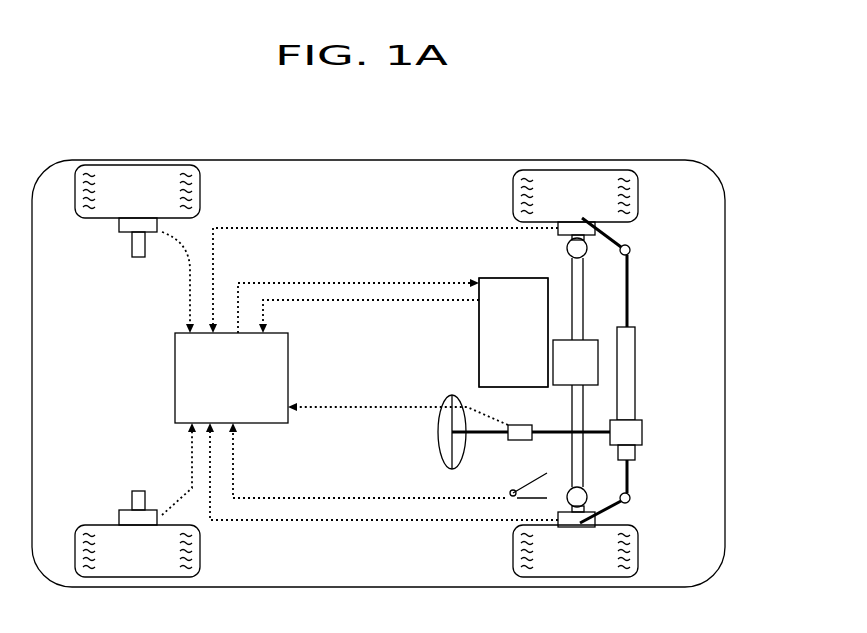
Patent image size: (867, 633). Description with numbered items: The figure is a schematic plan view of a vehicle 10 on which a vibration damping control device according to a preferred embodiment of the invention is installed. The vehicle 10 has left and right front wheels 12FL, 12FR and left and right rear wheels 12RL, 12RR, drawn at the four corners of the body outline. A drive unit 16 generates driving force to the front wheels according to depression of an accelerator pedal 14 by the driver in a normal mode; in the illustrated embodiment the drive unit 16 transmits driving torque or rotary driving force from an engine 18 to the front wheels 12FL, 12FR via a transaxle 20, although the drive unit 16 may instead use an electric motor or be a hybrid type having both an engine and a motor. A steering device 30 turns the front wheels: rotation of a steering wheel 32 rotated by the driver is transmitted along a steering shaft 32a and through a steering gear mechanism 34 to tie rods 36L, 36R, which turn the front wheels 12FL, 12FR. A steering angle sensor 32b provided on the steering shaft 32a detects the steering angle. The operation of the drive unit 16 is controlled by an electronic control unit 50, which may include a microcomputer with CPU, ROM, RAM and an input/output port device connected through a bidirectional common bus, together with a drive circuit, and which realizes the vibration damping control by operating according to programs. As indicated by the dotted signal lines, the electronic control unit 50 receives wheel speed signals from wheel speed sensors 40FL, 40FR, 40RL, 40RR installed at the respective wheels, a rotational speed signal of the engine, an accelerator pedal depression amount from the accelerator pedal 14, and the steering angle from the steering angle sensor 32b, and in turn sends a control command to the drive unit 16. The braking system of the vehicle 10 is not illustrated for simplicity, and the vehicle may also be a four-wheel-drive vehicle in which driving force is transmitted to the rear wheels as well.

The vehicle 10 is at (735, 398).
The left rear wheel 12RL is at (137, 191).
The left front wheel 12FL is at (575, 196).
The right rear wheel 12RR is at (137, 551).
The right front wheel 12FR is at (575, 551).
The accelerator pedal 14 is at (517, 484).
The drive unit 16 is at (515, 264).
The engine 18 is at (530, 347).
The transaxle 20 is at (590, 377).
The steering device 30 is at (660, 410).
The steering wheel 32 is at (437, 434).
The steering shaft 32a is at (556, 438).
The steering angle sensor 32b is at (543, 406).
The steering gear mechanism 34 is at (643, 431).
The left tie rod 36L is at (607, 248).
The right tie rod 36R is at (612, 497).
The left rear wheel speed sensor 40RL is at (118, 224).
The left front wheel speed sensor 40FL is at (597, 227).
The right rear wheel speed sensor 40RR is at (118, 517).
The right front wheel speed sensor 40FR is at (598, 521).
The electronic control unit 50 is at (242, 393).